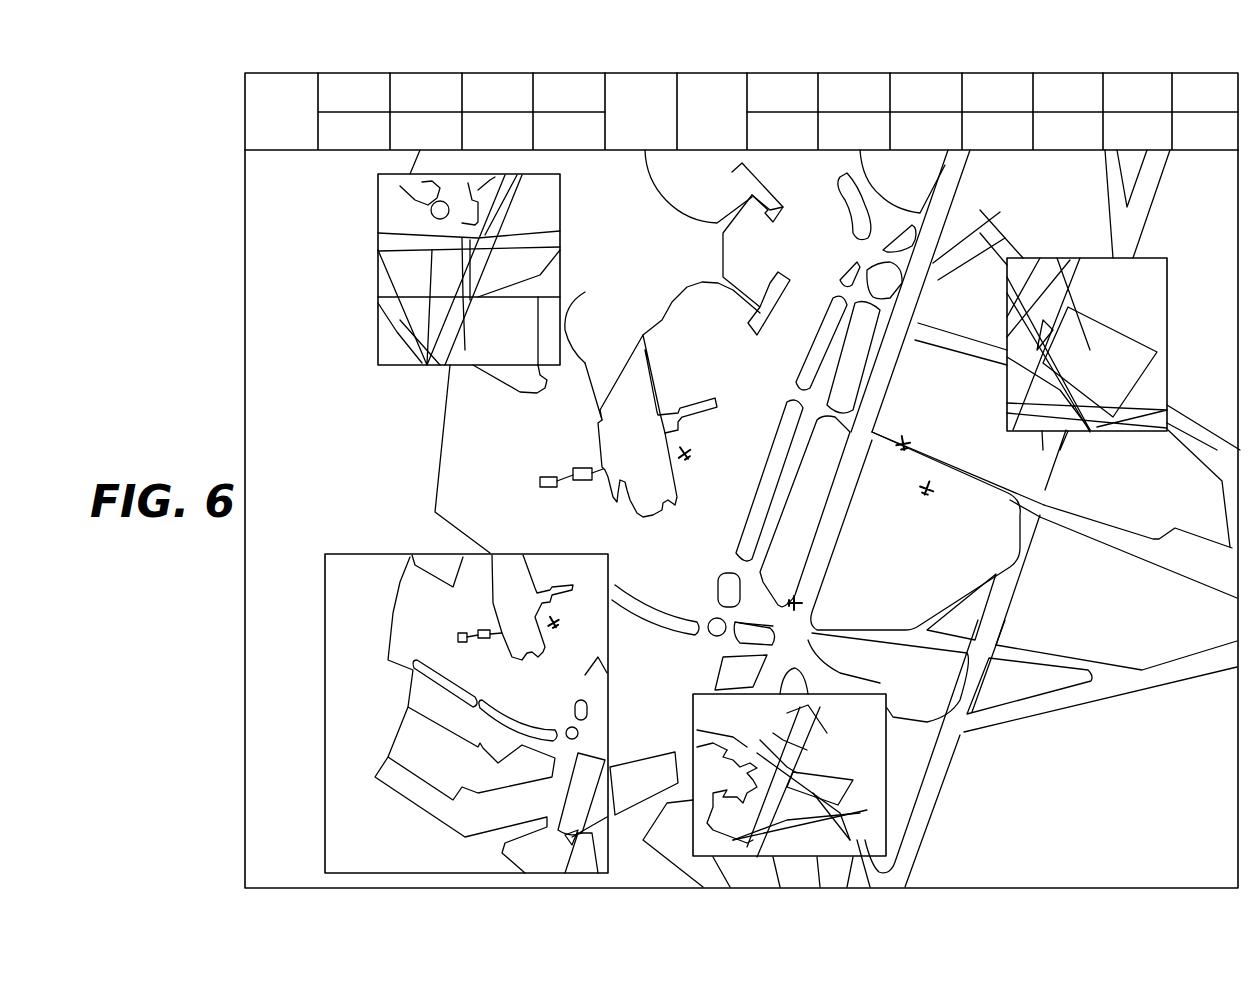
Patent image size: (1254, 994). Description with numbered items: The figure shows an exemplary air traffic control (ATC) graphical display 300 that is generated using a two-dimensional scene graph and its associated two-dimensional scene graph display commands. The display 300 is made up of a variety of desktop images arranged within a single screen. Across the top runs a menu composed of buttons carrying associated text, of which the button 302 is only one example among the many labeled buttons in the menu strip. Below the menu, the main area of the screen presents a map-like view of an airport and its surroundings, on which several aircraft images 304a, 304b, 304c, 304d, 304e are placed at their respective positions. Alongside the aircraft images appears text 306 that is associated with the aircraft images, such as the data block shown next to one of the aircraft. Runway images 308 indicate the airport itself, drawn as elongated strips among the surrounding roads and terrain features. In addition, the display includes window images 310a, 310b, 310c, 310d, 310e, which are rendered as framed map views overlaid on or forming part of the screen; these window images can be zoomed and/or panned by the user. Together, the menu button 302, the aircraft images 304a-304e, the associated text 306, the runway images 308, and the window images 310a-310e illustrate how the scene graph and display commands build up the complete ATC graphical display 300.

The ATC graphical display 300 is at (212, 150).
The button 302 is at (844, 73).
The aircraft image 304a is at (675, 456).
The aircraft image 304b is at (912, 446).
The aircraft image 304c is at (933, 494).
The aircraft image 304d is at (808, 606).
The aircraft image 304e is at (562, 623).
The text 306 is at (723, 472).
The runway images 308 is at (837, 533).
The window image 310a is at (997, 888).
The window image 310b is at (376, 362).
The window image 310c is at (333, 553).
The window image 310d is at (872, 692).
The window image 310e is at (1007, 398).